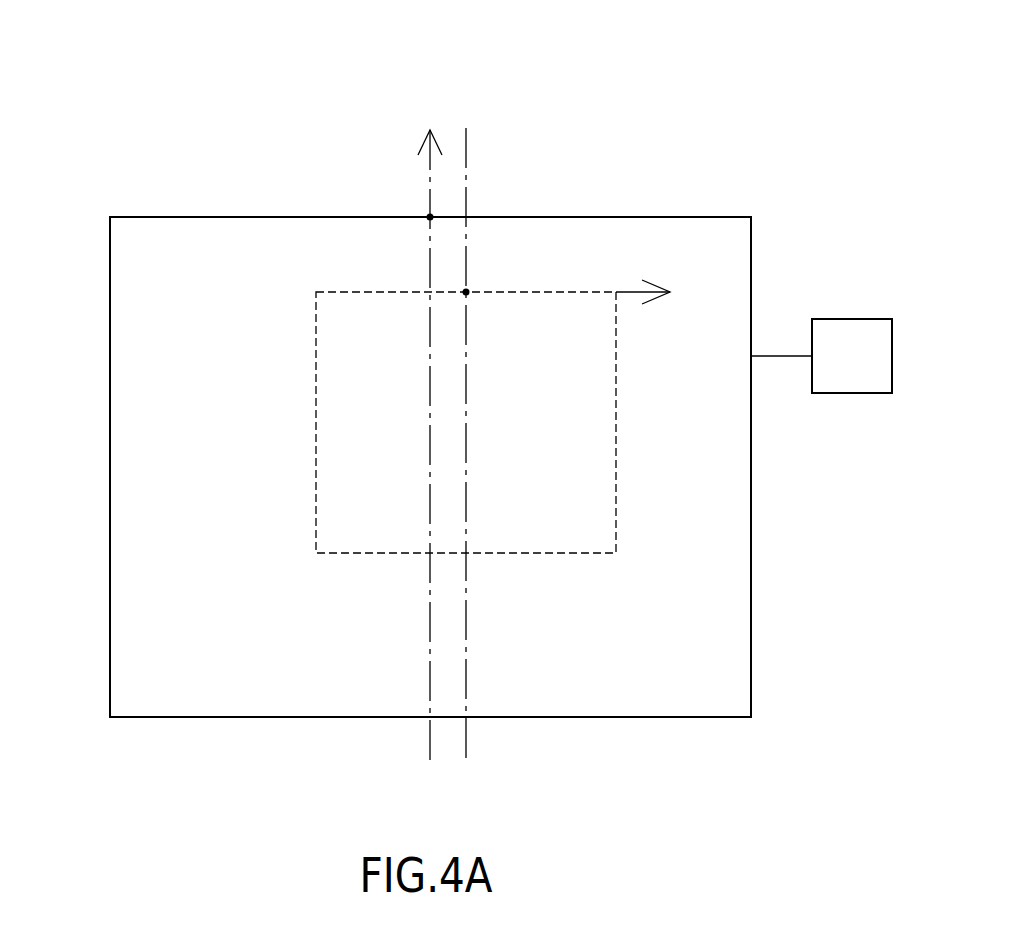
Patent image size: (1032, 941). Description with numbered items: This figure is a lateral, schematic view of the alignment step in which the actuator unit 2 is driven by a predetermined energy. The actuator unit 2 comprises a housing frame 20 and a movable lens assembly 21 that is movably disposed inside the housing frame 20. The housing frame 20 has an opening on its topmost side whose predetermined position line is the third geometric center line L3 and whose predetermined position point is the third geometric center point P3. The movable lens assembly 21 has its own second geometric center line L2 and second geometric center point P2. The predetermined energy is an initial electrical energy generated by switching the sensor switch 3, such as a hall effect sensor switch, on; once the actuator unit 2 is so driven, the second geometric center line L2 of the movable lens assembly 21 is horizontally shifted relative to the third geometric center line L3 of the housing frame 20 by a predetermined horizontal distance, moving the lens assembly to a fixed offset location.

The actuator unit 2 is at (116, 46).
The housing frame 20 is at (128, 400).
The movable lens assembly 21 is at (322, 385).
The sensor switch 3 is at (852, 312).
The second geometric center line L2 is at (468, 197).
The third geometric center line L3 is at (428, 177).
The second geometric center point P2 is at (470, 288).
The third geometric center point P3 is at (426, 222).